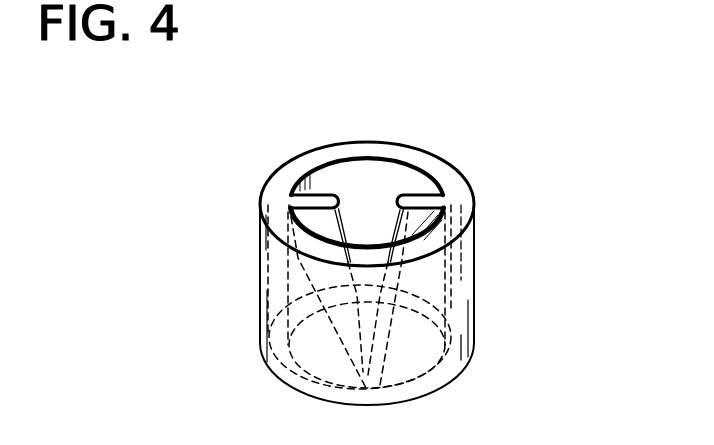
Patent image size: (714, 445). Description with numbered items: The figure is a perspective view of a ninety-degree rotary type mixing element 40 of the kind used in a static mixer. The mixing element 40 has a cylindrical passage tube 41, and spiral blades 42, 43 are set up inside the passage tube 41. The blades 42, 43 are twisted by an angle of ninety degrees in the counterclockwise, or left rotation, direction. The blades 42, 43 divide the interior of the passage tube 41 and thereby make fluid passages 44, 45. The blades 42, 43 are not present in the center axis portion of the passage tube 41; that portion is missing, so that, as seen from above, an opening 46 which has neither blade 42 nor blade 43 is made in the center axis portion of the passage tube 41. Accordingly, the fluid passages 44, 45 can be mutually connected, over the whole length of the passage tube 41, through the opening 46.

The mixing element 40 is at (484, 270).
The cylindrical passage tube 41 is at (453, 304).
The spiral blade 42 is at (322, 195).
The spiral blade 43 is at (410, 195).
The fluid passage 44 is at (318, 223).
The fluid passage 45 is at (403, 173).
The opening 46 is at (370, 192).